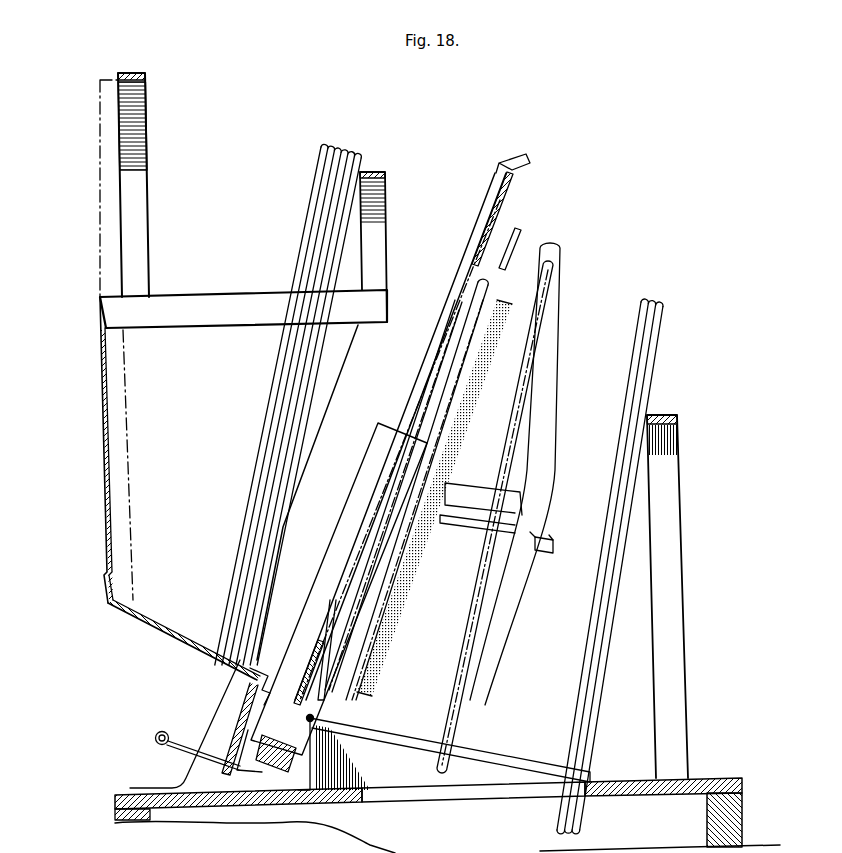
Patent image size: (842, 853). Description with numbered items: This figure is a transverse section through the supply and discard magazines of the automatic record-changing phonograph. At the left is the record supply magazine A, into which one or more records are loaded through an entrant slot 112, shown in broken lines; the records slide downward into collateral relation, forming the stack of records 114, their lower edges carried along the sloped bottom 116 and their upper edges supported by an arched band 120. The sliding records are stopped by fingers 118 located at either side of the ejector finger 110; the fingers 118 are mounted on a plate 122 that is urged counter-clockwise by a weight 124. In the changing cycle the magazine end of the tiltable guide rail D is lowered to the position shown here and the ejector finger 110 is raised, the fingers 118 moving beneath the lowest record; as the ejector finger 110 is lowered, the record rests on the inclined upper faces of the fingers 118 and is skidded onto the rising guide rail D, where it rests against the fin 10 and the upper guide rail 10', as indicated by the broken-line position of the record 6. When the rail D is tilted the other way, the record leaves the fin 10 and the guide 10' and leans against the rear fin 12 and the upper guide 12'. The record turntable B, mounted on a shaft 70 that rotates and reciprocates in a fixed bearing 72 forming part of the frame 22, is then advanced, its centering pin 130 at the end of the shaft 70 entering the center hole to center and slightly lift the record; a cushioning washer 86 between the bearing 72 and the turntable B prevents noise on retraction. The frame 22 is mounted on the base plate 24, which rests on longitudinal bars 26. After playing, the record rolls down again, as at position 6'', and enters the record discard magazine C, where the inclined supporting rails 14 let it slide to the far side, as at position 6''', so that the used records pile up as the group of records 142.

The record 6 is at (400, 436).
The record position 6'' is at (432, 485).
The record position 6''' is at (517, 517).
The fin 10 is at (339, 597).
The upper guide rail 10' is at (494, 210).
The rear fin 12 is at (343, 657).
The upper guide 12' is at (530, 241).
The inclined supporting rails 14 is at (530, 756).
The frame 22 is at (545, 420).
The base plate 24 is at (718, 778).
The longitudinal bars 26 is at (707, 815).
The shaft 70 is at (545, 535).
The fixed bearing 72 is at (463, 538).
The cushioning washer 86 is at (470, 488).
The ejector finger 110 is at (230, 707).
The entrant slot 112 is at (105, 378).
The stack of records 114 is at (338, 147).
The sloped bottom 116 is at (172, 647).
The fingers 118 is at (280, 670).
The arched band 120 is at (387, 173).
The plate 122 is at (260, 752).
The weight 124 is at (193, 738).
The centering pin 130 is at (458, 437).
The group of records 142 is at (654, 305).
The record supply magazine A is at (130, 448).
The record turntable B is at (462, 428).
The record discard magazine C is at (509, 790).
The tiltable guide rail D is at (292, 770).